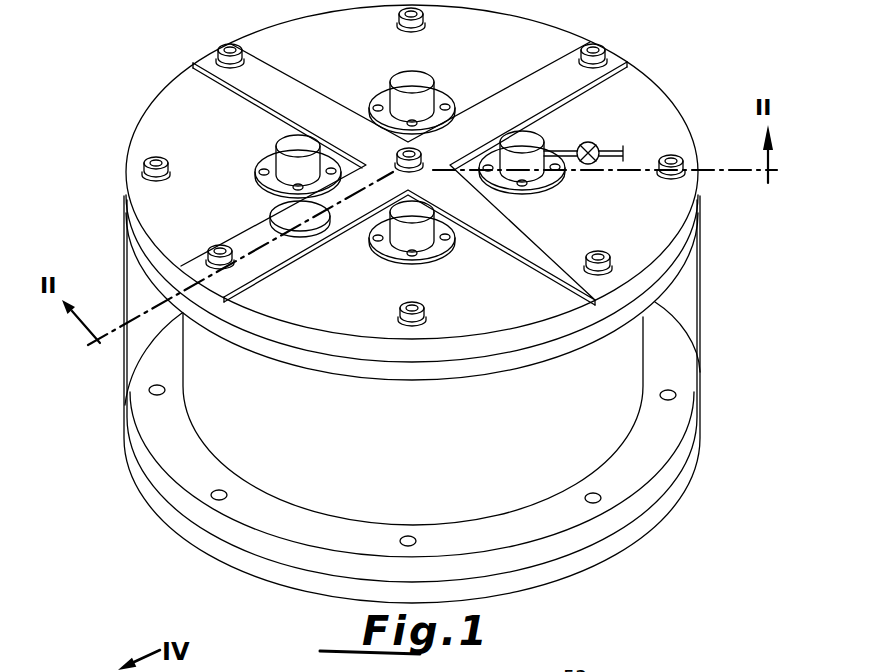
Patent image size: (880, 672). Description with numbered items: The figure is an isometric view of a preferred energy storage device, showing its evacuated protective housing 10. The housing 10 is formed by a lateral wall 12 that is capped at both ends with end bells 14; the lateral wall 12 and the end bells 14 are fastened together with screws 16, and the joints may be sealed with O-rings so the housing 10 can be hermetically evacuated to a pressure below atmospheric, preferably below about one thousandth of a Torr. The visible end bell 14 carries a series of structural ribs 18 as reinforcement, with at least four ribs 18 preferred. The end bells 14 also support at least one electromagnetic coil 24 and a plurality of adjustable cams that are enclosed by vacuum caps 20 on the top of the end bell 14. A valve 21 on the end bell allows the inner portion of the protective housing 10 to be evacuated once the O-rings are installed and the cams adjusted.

The protective housing 10 is at (652, 541).
The lateral wall 12 is at (593, 370).
The end bells 14 is at (180, 310).
The screws 16 is at (153, 163).
The structural ribs 18 is at (270, 83).
The vacuum caps 20 is at (417, 86).
The valve 21 is at (587, 167).
The electromagnetic coil 24 is at (302, 228).